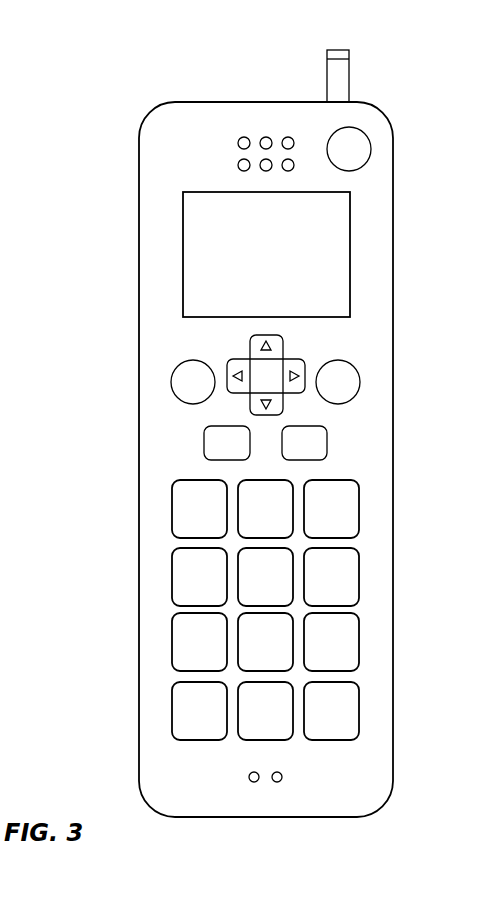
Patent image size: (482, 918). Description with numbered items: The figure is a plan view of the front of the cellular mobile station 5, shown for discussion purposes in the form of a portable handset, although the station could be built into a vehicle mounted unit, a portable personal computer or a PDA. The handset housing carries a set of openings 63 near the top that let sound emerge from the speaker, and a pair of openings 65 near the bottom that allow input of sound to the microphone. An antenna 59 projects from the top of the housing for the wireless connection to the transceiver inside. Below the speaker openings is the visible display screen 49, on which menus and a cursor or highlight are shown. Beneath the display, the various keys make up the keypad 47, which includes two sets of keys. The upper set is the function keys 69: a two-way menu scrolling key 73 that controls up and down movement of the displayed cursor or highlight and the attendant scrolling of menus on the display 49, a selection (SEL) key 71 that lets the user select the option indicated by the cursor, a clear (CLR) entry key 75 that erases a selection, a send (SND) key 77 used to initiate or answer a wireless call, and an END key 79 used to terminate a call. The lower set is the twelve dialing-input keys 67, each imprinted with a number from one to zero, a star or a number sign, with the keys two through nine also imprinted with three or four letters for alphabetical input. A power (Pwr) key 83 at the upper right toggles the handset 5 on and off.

The mobile station 5 is at (139, 213).
The keypad 47 is at (427, 535).
The display screen 49 is at (351, 232).
The antenna 59 is at (324, 96).
The openings 63 is at (238, 136).
The openings 65 is at (246, 783).
The dialing-input keys 67 is at (106, 600).
The function keys 69 is at (106, 400).
The selection (SEL) key 71 is at (362, 368).
The menu scrolling key 73 is at (309, 357).
The clear (CLR) entry key 75 is at (172, 366).
The send (SND) key 77 is at (205, 445).
The END key 79 is at (330, 445).
The power (Pwr) key 83 is at (374, 138).